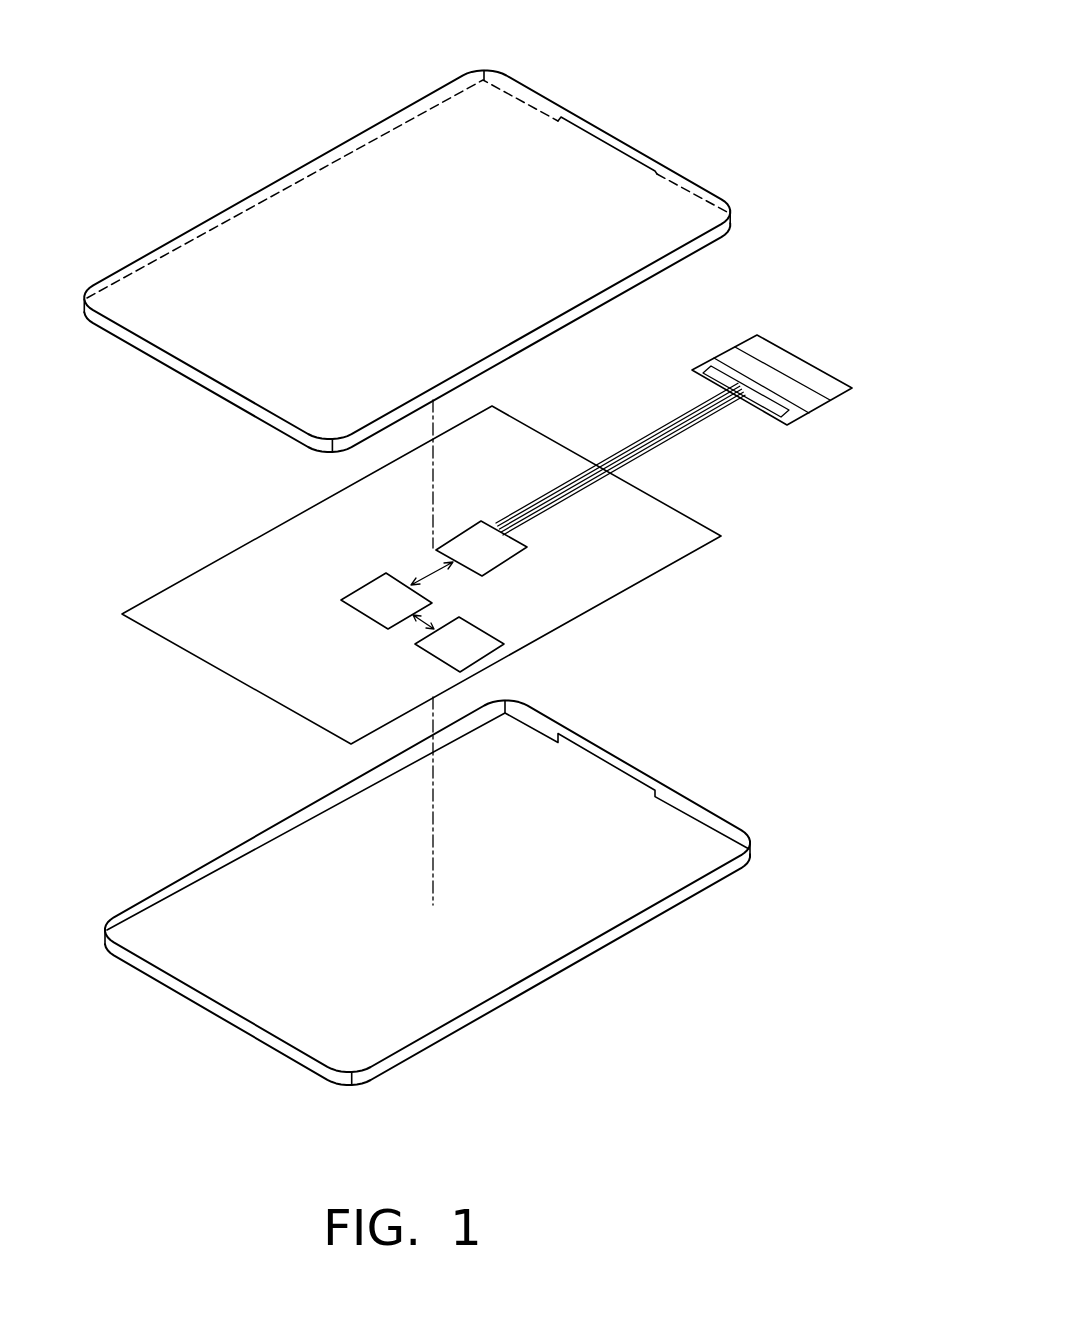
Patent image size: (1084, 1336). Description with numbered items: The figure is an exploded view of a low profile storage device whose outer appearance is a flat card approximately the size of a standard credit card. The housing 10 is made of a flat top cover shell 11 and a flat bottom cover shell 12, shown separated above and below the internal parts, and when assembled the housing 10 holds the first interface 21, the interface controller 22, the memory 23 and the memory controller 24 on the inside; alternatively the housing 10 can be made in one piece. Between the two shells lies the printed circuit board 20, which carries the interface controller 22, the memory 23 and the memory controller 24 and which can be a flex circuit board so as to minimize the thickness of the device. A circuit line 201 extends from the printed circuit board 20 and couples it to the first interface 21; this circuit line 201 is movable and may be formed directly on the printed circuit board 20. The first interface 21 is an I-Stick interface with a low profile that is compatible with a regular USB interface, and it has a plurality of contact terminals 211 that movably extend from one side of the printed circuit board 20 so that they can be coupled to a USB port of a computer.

The housing 10 is at (258, 137).
The flat top cover shell 11 is at (513, 108).
The flat bottom cover shell 12 is at (647, 815).
The printed circuit board 20 is at (217, 641).
The circuit line 201 is at (672, 423).
The first interface 21 is at (828, 355).
The contact terminals 211 is at (827, 388).
The interface controller 22 is at (496, 561).
The memory 23 is at (483, 647).
The memory controller 24 is at (371, 595).